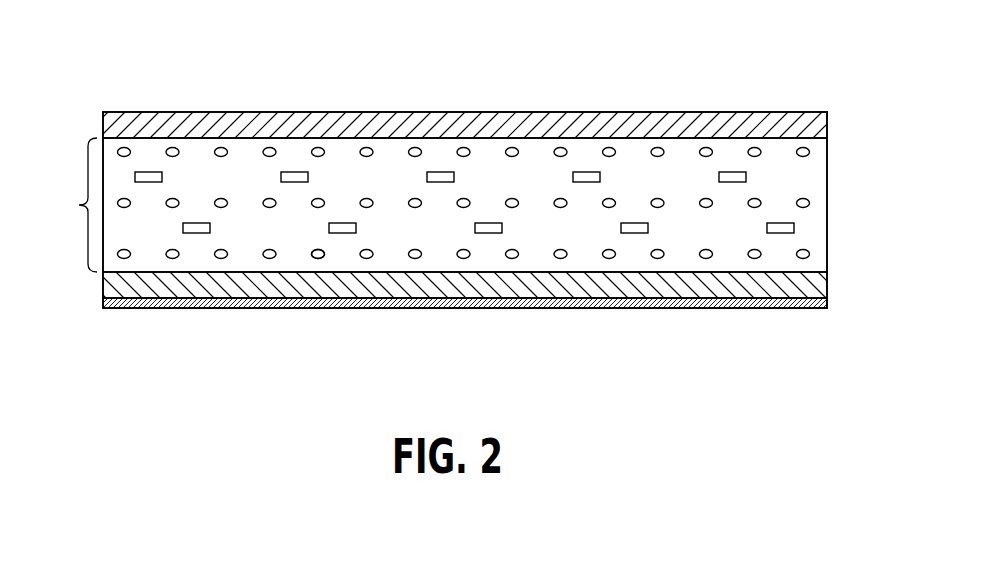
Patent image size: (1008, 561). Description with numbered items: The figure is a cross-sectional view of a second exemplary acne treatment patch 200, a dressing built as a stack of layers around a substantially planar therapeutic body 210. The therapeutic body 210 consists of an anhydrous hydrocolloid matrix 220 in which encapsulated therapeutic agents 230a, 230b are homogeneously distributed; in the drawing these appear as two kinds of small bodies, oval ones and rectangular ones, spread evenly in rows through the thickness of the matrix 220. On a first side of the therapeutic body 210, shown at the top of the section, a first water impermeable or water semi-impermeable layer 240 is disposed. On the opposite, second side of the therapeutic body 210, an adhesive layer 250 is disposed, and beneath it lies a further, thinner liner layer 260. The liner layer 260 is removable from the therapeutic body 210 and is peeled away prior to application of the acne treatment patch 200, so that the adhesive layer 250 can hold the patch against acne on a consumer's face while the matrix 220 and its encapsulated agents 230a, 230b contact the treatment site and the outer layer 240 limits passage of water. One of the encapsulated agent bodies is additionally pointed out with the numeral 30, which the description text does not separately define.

The acne treatment patch 200 is at (779, 46).
The therapeutic body 210 is at (62, 205).
The anhydrous hydrocolloid matrix 220 is at (818, 177).
The encapsulated therapeutic agent 230a is at (220, 147).
The encapsulated therapeutic agent 230b is at (438, 172).
The water impermeable or water semi-impermeable layer 240 is at (742, 125).
The adhesive layer 250 is at (823, 282).
The liner layer 260 is at (757, 302).
The fiber 30 is at (305, 258).